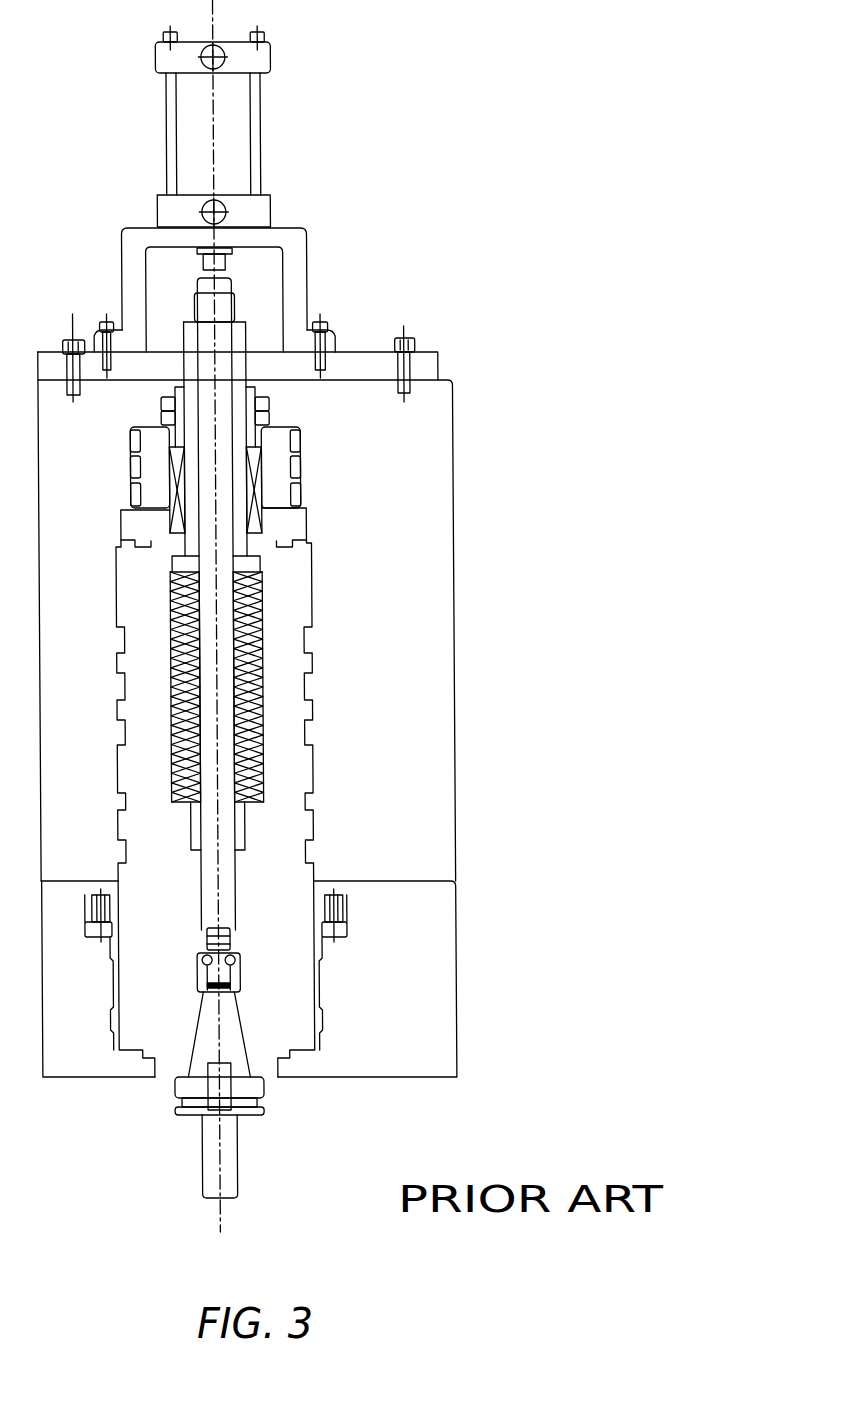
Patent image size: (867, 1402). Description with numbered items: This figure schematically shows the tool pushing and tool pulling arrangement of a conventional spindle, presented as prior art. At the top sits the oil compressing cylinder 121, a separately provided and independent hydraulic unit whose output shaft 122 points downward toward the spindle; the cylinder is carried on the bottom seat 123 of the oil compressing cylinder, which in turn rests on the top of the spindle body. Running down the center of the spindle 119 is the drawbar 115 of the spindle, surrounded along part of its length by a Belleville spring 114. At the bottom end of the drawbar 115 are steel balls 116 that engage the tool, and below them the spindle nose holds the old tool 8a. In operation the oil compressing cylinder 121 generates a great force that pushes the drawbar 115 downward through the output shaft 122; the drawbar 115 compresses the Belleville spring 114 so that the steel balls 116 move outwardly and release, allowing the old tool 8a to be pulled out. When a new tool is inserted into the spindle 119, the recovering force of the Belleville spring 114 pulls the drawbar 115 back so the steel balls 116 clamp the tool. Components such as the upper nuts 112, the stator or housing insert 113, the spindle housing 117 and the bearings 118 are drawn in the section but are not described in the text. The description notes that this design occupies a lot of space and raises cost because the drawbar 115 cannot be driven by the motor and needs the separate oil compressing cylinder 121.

The old tool 8a is at (228, 1135).
The lock nuts 112 is at (267, 415).
The stator 113 is at (263, 505).
The Belleville spring 114 is at (263, 737).
The drawbar of spindle 115 is at (232, 550).
The steel ball 116 is at (243, 958).
The spindle housing 117 is at (370, 667).
The bearings 118 is at (273, 462).
The spindle 119 is at (233, 302).
The oil compressing cylinder 121 is at (238, 142).
The output shaft of oil compressing cylinder 122 is at (225, 256).
The bottom seat of oil compressing cylinder 123 is at (295, 278).